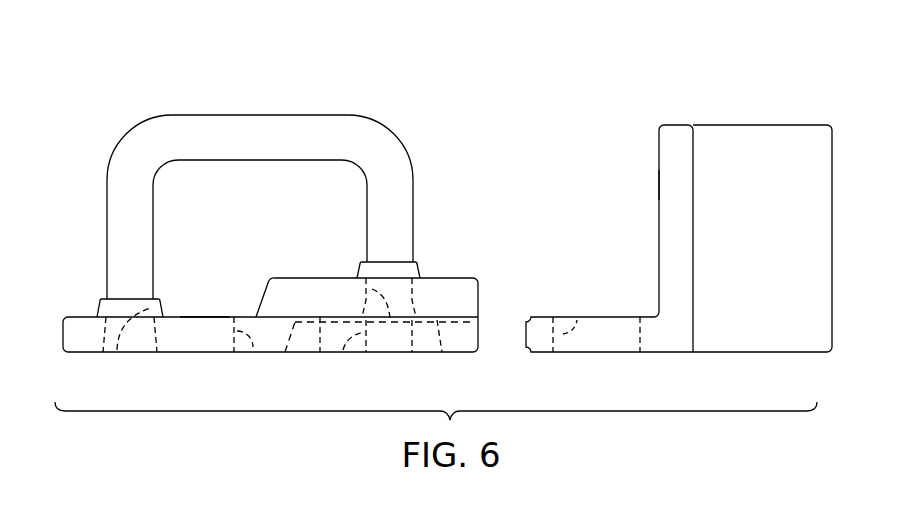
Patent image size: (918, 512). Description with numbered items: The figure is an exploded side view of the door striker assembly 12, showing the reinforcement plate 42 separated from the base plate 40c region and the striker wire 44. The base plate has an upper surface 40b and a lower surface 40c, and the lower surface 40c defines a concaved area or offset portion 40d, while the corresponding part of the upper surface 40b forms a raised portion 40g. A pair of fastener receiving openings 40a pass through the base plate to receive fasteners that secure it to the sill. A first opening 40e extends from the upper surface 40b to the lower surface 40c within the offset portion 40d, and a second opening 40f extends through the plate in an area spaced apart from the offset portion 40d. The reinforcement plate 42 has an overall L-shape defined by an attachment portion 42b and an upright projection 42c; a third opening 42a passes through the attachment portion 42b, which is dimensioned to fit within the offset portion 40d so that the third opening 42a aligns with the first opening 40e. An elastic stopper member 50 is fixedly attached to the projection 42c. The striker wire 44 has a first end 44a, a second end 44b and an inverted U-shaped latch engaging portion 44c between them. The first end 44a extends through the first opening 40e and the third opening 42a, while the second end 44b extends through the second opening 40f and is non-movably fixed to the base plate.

The door striker assembly 12 is at (570, 60).
The fastener receiving openings 40a is at (257, 352).
The upper surface 40b is at (203, 316).
The lower surface 40c is at (190, 352).
The offset portion 40d is at (442, 352).
The first opening 40e is at (390, 320).
The second opening 40f is at (117, 352).
The raised portion 40g is at (480, 293).
The reinforcement plate 42 is at (678, 123).
The third opening 42a is at (573, 318).
The attachment portion 42b is at (538, 336).
The projection 42c is at (657, 182).
The striker wire 44 is at (309, 137).
The first end 44a is at (343, 355).
The second end 44b is at (127, 277).
The latch engaging portion 44c is at (220, 132).
The elastic stopper member 50 is at (762, 172).